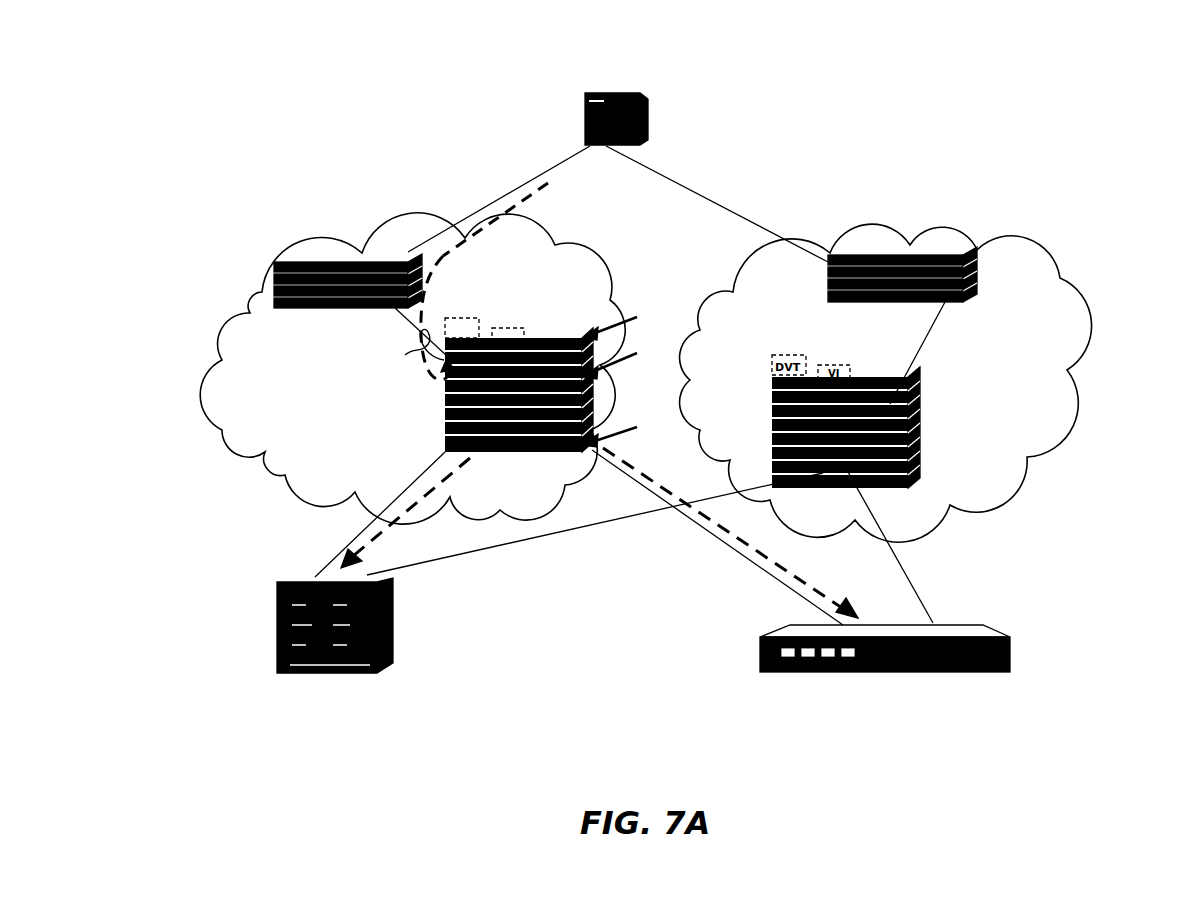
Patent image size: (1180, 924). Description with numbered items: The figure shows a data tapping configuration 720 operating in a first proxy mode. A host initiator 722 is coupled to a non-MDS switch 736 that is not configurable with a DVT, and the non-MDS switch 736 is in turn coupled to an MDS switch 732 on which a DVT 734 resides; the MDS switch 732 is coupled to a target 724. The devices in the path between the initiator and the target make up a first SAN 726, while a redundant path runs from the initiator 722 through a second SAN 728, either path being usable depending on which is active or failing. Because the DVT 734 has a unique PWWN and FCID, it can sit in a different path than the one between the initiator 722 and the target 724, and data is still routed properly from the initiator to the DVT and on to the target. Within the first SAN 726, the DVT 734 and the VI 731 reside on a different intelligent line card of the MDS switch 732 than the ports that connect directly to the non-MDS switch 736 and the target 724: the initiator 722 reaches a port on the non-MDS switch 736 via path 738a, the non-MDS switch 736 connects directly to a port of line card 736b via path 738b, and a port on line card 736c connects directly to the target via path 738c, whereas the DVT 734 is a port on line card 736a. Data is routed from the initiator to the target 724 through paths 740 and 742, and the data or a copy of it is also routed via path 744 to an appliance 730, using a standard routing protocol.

The storage area network system 720 is at (138, 46).
The host initiator 722 is at (585, 112).
The target 724 is at (277, 656).
The first SAN 726 is at (222, 440).
The second SAN 728 is at (1058, 262).
The appliance 730 is at (758, 656).
The VI 731 is at (530, 328).
The MDS switch 732 is at (443, 422).
The DVT 734 is at (403, 351).
The non-MDS switch 736 is at (272, 285).
The line card 736a is at (633, 323).
The line card 736b is at (633, 361).
The line card 736c is at (630, 425).
The path 738a is at (480, 210).
The path 738b is at (372, 333).
The path 738c is at (326, 562).
The path 740 is at (532, 192).
The path 742 is at (564, 454).
The path 744 is at (748, 530).